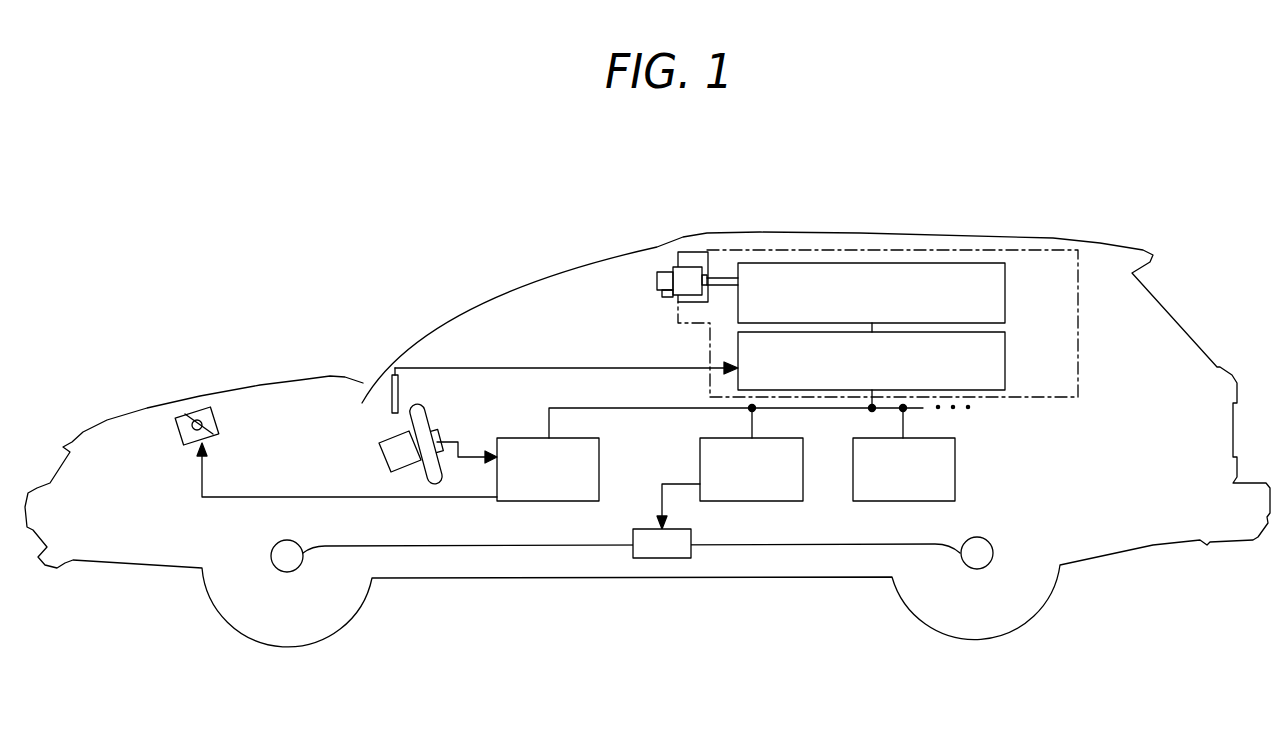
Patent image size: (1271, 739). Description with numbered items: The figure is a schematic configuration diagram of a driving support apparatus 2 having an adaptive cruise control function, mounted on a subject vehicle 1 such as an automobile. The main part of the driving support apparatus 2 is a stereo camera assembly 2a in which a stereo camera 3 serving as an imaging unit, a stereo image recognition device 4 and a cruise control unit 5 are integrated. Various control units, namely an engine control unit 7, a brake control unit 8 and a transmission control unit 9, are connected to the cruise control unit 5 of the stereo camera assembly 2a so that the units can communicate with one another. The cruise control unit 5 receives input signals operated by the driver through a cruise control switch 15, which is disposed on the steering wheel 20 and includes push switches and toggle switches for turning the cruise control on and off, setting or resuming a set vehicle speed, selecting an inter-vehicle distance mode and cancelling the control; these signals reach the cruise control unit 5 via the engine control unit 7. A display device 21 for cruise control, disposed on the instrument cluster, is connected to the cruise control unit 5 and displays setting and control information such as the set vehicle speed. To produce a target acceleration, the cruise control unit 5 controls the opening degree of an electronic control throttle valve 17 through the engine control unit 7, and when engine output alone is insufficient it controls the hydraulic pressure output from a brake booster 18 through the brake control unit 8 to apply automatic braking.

The vehicle 1 is at (1103, 167).
The driving support apparatus 2 is at (896, 280).
The stereo camera assembly 2a is at (1079, 320).
The stereo camera 3 is at (699, 256).
The stereo image recognition device 4 is at (1005, 280).
The cruise control unit 5 is at (1005, 350).
The engine control unit (E/G_ECU) 7 is at (575, 433).
The brake control unit (BRK_ECU) 8 is at (790, 432).
The transmission control unit (T/M_ECU) 9 is at (943, 432).
The cruise control switch 15 is at (437, 437).
The electronic control throttle valve 17 is at (220, 418).
The brake booster 18 is at (691, 530).
The steering wheel 20 is at (438, 462).
The display device 21 is at (392, 393).